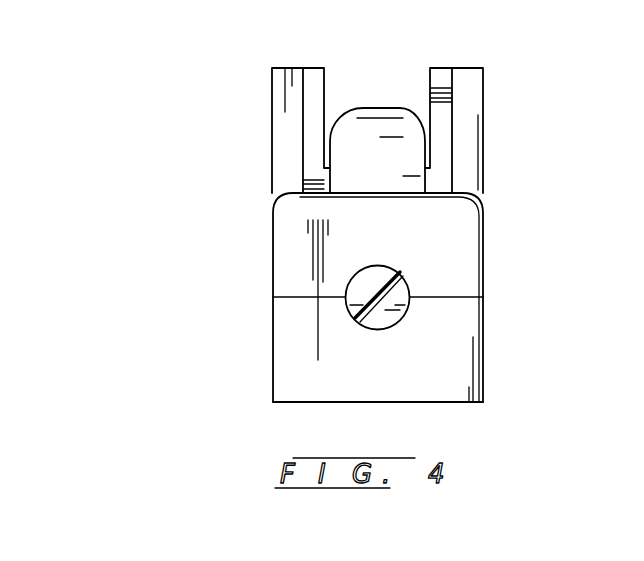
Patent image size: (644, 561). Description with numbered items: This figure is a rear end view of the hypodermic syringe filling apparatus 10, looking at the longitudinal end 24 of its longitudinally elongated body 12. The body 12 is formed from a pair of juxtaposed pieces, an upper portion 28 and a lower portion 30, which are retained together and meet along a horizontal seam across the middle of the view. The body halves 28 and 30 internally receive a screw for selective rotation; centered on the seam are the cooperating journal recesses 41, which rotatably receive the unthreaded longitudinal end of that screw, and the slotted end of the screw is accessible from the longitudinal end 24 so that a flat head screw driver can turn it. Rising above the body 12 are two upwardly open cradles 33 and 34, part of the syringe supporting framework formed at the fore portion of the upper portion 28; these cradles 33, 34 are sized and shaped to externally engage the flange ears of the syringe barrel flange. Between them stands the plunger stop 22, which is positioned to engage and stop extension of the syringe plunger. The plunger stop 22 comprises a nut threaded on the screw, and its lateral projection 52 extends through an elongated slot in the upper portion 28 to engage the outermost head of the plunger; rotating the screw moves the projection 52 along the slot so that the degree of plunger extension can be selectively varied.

The hypodermic syringe filling apparatus 10 is at (489, 30).
The longitudinally elongated body 12 is at (493, 254).
The plunger stop 22 is at (397, 93).
The longitudinal end 24 is at (243, 427).
The upper portion 28 is at (290, 242).
The lower portion 30 is at (440, 360).
The cradle 33 is at (278, 102).
The cradle 34 is at (467, 87).
The journal recesses 41 is at (360, 267).
The lateral projection 52 is at (356, 147).